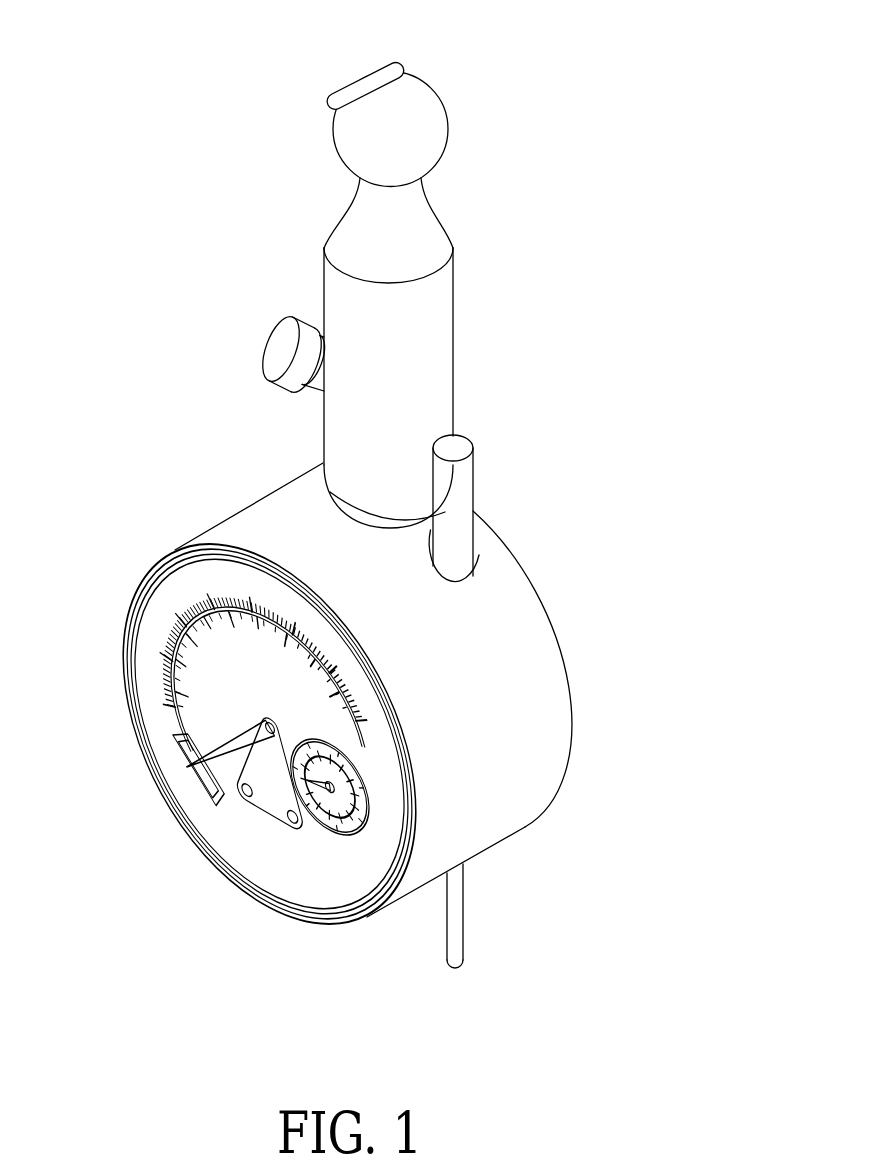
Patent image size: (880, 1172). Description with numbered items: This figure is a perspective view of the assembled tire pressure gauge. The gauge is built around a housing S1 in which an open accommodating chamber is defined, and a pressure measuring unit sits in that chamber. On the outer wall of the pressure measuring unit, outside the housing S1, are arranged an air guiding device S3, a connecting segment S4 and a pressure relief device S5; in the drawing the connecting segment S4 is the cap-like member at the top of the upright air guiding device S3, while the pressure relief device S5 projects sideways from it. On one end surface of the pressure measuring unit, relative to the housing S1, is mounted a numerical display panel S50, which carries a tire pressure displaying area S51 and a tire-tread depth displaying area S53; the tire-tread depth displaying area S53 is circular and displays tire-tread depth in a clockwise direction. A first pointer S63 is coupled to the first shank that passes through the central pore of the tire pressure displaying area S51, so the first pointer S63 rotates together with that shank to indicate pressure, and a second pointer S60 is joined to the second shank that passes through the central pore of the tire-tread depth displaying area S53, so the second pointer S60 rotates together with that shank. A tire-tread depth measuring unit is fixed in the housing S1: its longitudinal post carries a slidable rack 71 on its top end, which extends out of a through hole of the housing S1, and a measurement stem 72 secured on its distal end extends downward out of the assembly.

The housing S1 is at (530, 650).
The air guiding device S3 is at (410, 330).
The connecting segment S4 is at (352, 82).
The pressure relief device S5 is at (283, 347).
The slidable rack 71 is at (460, 487).
The measurement stem 72 is at (453, 932).
The numerical display panel S50 is at (177, 580).
The tire pressure displaying area S51 is at (177, 690).
The tire-tread depth displaying area S53 is at (353, 840).
The second pointer S60 is at (318, 830).
The first pointer S63 is at (205, 773).